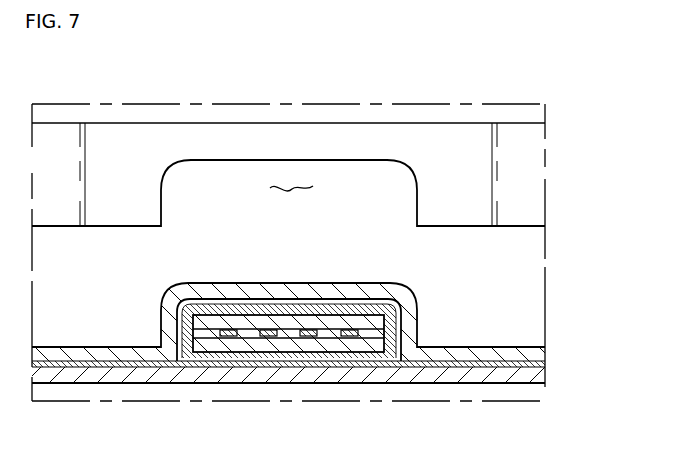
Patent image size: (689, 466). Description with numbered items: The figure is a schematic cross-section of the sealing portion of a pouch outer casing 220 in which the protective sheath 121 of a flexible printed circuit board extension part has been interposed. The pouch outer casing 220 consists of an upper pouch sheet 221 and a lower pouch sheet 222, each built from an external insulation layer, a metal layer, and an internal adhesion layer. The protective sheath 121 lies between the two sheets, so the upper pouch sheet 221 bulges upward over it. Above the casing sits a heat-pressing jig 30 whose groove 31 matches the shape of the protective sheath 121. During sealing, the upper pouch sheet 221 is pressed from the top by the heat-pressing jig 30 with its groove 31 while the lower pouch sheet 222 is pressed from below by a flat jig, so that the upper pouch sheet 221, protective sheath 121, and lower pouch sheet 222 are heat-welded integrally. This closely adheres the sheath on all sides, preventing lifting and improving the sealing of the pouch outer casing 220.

The heat-pressing jig 30 is at (533, 178).
The groove 31 is at (290, 188).
The protective sheath 121 is at (234, 355).
The pouch outer casing 220 is at (344, 233).
The upper pouch sheet 221 is at (538, 352).
The lower pouch sheet 222 is at (538, 377).